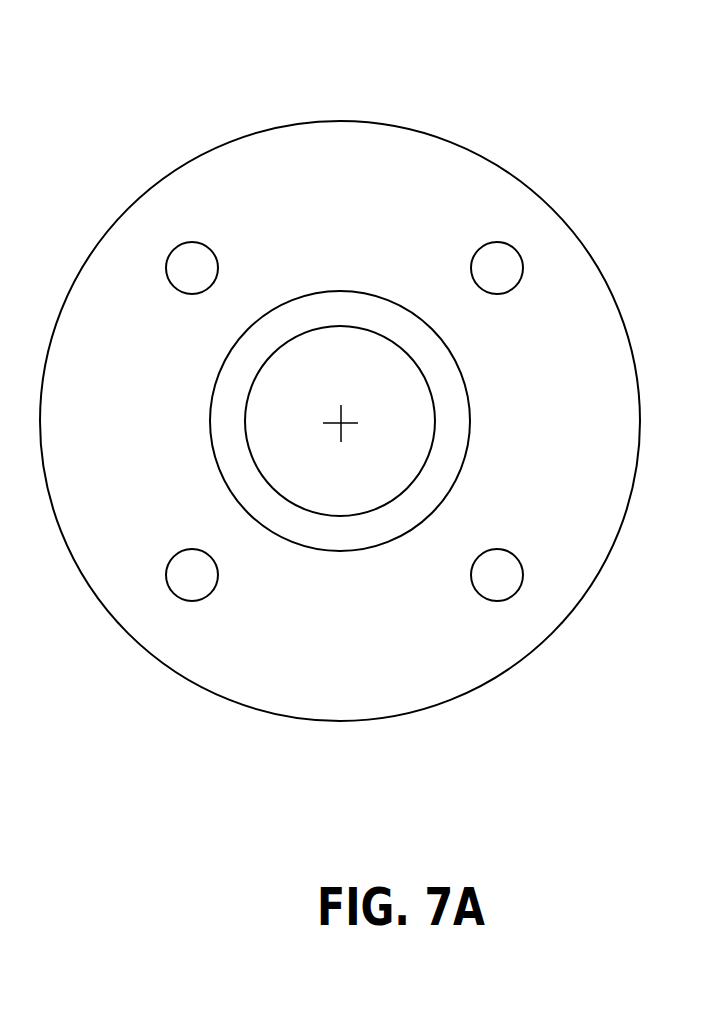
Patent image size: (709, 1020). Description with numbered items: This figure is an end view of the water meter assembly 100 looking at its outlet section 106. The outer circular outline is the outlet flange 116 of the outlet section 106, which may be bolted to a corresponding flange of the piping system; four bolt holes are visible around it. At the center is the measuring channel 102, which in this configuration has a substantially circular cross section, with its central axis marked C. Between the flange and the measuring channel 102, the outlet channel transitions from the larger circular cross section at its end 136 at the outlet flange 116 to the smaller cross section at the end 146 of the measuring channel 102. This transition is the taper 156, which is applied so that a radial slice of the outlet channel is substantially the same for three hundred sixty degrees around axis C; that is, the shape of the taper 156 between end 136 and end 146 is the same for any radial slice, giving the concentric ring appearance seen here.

The water meter assembly 100 is at (177, 70).
The outlet section 106 is at (602, 262).
The outlet flange 116 is at (490, 158).
The taper 156 is at (243, 458).
The end 136 is at (283, 540).
The end 146 is at (437, 423).
The measuring channel 102 is at (362, 490).